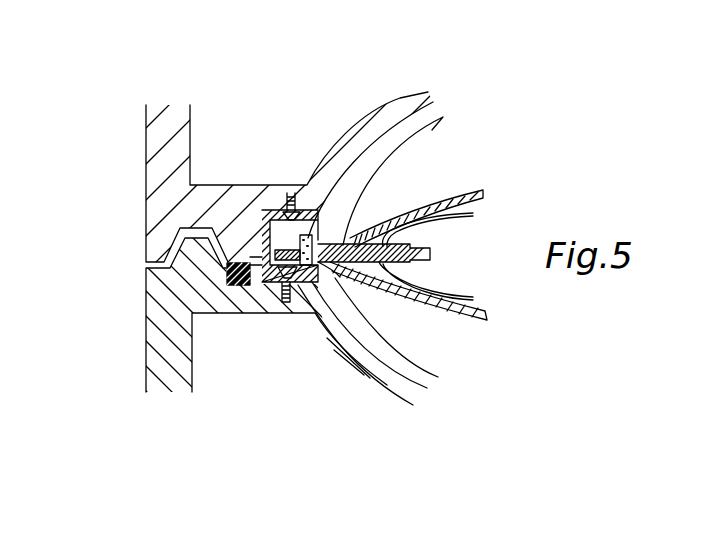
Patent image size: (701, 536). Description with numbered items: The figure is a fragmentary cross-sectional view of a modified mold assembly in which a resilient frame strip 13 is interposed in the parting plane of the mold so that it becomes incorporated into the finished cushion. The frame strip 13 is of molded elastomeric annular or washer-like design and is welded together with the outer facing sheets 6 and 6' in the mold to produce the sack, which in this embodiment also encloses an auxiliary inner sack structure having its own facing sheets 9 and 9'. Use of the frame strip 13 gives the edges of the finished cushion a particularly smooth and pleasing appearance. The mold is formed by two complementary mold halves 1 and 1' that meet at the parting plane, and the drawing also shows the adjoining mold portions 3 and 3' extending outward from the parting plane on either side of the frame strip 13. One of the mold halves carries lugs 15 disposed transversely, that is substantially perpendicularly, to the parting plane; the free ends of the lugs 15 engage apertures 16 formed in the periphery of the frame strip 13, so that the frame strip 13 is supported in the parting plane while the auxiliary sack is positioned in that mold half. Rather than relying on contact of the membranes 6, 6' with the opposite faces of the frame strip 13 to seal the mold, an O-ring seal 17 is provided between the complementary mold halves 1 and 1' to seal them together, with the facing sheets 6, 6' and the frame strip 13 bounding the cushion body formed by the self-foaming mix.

The mold half 1 is at (240, 315).
The mold half 1' is at (287, 230).
The lower funnel-shaped guide 3 is at (368, 367).
The upper funnel-shaped guide 3' is at (375, 147).
The facing sheet 6 is at (412, 315).
The facing sheet 6' is at (422, 196).
The facing sheet 9 is at (435, 278).
The facing sheet 9' is at (439, 232).
The frame strip 13 is at (367, 238).
The lug 15 is at (302, 242).
The aperture 16 is at (343, 280).
The O-ring seal 17 is at (230, 272).